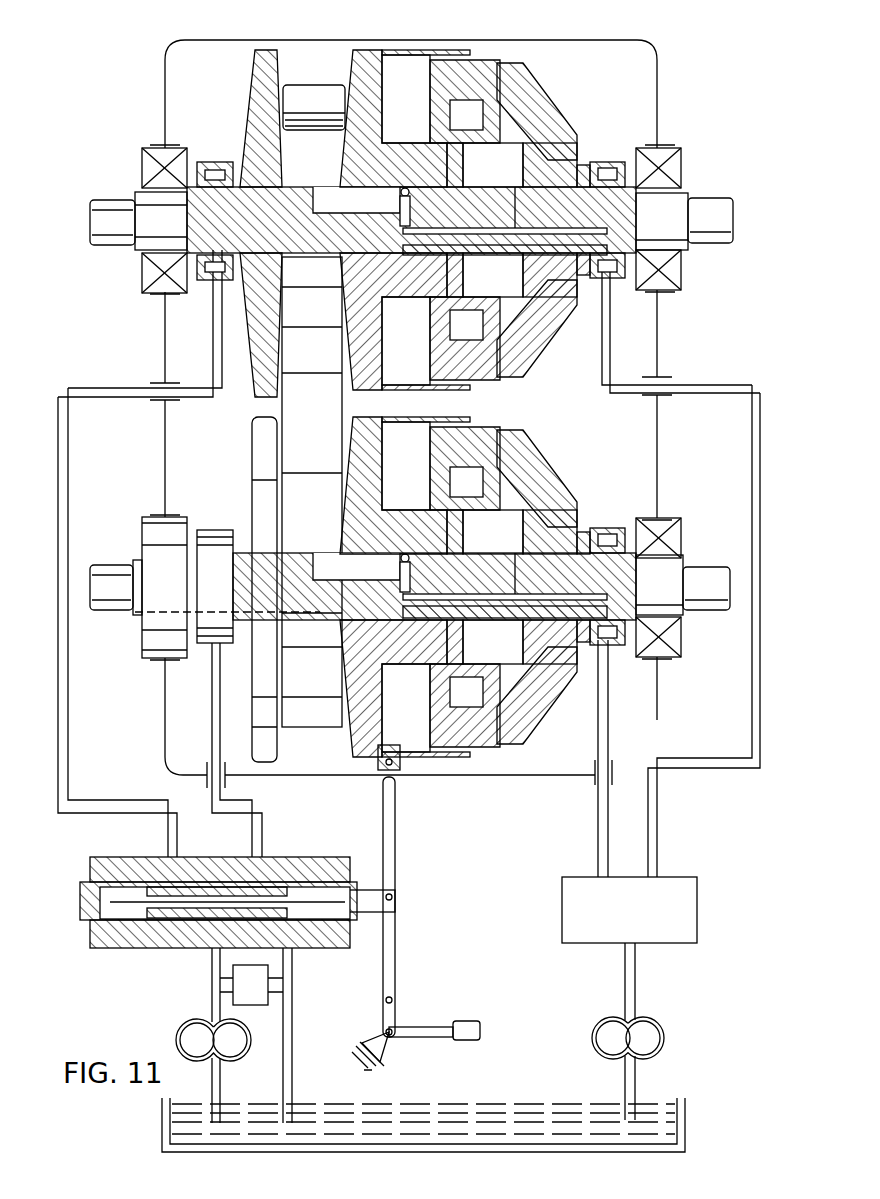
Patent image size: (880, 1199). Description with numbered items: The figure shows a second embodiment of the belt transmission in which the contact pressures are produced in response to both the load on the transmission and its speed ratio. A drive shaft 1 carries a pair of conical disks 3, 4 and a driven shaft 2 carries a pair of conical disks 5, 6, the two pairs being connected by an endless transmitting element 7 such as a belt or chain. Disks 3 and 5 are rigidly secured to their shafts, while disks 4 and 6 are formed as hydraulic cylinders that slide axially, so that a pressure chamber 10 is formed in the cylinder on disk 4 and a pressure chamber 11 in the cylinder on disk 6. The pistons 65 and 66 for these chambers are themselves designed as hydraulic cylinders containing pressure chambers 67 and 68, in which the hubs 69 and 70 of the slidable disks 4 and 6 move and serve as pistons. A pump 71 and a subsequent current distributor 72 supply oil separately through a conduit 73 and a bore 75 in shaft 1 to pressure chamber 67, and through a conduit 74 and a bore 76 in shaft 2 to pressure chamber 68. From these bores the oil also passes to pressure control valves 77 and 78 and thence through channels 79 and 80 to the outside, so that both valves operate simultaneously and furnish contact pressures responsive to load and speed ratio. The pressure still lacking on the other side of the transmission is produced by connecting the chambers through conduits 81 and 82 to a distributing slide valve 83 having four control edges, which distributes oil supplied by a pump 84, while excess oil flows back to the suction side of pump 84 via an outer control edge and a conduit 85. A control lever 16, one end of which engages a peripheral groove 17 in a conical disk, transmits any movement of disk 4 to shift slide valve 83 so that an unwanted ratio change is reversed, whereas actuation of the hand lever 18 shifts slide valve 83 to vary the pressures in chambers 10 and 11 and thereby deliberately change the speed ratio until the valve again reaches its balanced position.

The drive shaft 1 is at (712, 585).
The driven shaft 2 is at (710, 215).
The conical disk 3 is at (263, 683).
The conical disk 4 is at (360, 435).
The conical disk 5 is at (263, 88).
The conical disk 6 is at (364, 62).
The endless transmitting element 7 is at (312, 95).
The pressure chamber 10 is at (408, 75).
The pressure chamber 11 is at (410, 453).
The control lever 16 is at (393, 978).
The peripheral groove 17 is at (400, 770).
The hand lever 18 is at (478, 1030).
The piston 65 is at (520, 472).
The piston 66 is at (443, 85).
The pressure chamber 67 is at (510, 537).
The pressure chamber 68 is at (553, 215).
The hub 69 is at (452, 527).
The hub 70 is at (463, 115).
The pump 71 is at (648, 1035).
The current distributor 72 is at (685, 918).
The conduit 73 is at (615, 772).
The conduit 74 is at (752, 694).
The bore 75 is at (530, 680).
The bore 76 is at (523, 147).
The pressure control valve 77 is at (398, 568).
The pressure control valve 78 is at (520, 160).
The channel 79 is at (313, 567).
The channel 80 is at (343, 217).
The conduit 81 is at (213, 750).
The conduit 82 is at (66, 722).
The distributing slide valve 83 is at (95, 905).
The pump 84 is at (193, 1035).
The conduit 85 is at (290, 1027).